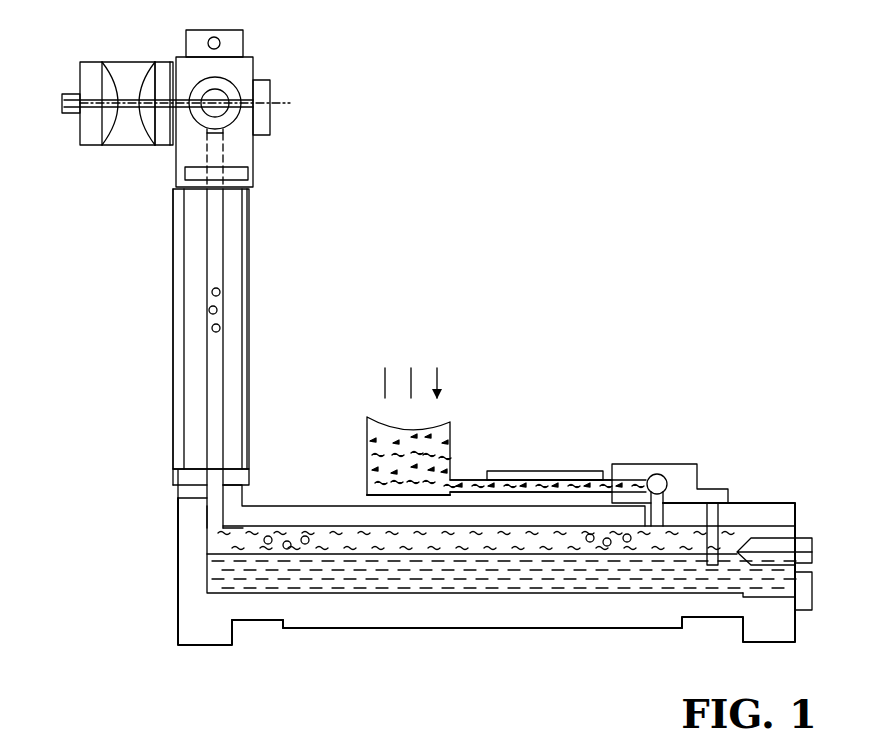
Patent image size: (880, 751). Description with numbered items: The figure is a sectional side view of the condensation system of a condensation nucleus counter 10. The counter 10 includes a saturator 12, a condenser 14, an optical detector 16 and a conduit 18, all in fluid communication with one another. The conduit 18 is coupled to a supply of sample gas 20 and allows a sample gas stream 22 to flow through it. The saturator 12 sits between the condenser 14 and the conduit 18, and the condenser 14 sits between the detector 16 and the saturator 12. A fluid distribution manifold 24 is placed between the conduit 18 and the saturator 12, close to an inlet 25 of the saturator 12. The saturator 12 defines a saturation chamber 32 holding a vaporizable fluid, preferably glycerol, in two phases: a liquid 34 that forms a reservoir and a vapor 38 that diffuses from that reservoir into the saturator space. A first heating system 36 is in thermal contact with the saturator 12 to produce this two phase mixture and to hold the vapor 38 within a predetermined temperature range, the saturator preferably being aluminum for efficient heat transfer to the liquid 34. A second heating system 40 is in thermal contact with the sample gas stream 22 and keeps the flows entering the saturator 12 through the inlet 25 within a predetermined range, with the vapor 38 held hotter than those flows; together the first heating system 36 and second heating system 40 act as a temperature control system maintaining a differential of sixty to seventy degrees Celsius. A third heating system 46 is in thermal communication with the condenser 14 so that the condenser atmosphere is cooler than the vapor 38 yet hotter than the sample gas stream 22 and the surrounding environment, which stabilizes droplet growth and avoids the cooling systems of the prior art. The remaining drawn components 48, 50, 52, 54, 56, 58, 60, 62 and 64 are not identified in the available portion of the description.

The condensation nucleus counter 10 is at (470, 278).
The saturator 12 is at (182, 668).
The condenser 14 is at (266, 493).
The optical detector 16 is at (68, 165).
The conduit 18 is at (583, 476).
The sample gas 20 is at (452, 432).
The sample gas stream 22 is at (550, 485).
The fluid distribution manifold 24 is at (670, 464).
The inlet 25 is at (660, 516).
The saturation chamber 32 is at (333, 555).
The liquid 34 is at (438, 576).
The first heating system 36 is at (328, 628).
The vapor 38 is at (686, 548).
The second heating system 40 is at (508, 470).
The third heating system 46 is at (172, 388).
The shaft 48 is at (67, 94).
The motor assembly 50 is at (80, 153).
The motor 52 is at (121, 56).
The bracket 54 is at (272, 130).
The hub 56 is at (219, 101).
The coupling 58 is at (166, 100).
The sensors 60 is at (212, 327).
The wheel 62 is at (234, 123).
The axis 64 is at (225, 95).